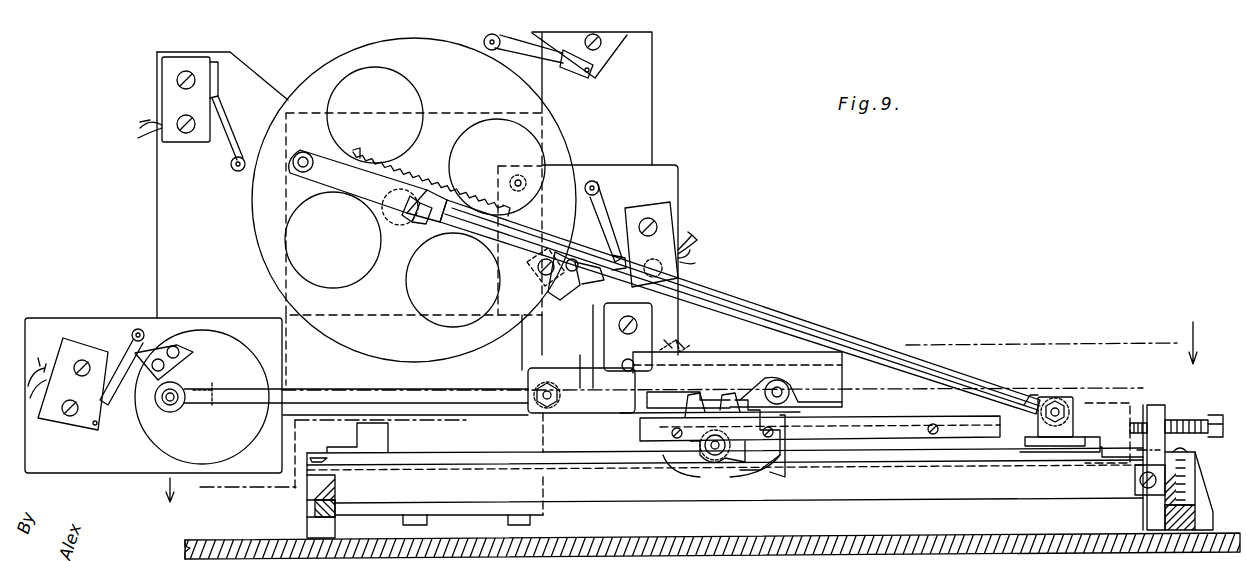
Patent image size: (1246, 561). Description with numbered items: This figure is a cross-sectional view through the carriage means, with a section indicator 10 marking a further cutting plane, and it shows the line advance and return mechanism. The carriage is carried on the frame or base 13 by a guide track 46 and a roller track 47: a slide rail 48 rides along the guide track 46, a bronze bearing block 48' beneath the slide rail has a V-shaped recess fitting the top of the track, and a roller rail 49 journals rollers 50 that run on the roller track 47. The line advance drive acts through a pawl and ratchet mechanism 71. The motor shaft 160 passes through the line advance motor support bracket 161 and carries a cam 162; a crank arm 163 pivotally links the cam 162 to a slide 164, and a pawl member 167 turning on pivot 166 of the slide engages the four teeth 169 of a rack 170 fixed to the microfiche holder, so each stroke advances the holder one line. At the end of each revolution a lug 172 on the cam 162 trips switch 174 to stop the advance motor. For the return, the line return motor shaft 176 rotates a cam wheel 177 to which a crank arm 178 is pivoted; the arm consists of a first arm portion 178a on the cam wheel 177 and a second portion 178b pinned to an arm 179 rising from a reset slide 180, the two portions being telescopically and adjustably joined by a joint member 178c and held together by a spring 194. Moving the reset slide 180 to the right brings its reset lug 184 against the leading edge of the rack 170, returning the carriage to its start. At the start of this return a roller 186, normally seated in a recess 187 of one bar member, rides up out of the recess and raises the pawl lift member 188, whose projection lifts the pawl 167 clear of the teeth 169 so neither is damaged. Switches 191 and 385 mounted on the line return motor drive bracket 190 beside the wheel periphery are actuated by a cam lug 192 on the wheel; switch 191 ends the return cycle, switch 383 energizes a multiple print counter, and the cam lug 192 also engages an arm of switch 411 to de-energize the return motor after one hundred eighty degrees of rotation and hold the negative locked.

The section line 10 is at (674, 409).
The base 13 is at (840, 538).
The guide track 46 is at (307, 535).
The roller track 47 is at (1172, 513).
The slide rail 48 is at (289, 512).
The bearing block 48' is at (302, 503).
The roller rail 49 is at (1187, 478).
The rollers 50 is at (1147, 490).
The pawl and ratchet mechanism 71 is at (832, 400).
The shaft 160 is at (200, 388).
The line advance motor support bracket 161 is at (93, 315).
The cam 162 is at (212, 330).
The crank arm 163 is at (235, 404).
The slide 164 is at (581, 390).
The pivot 166 is at (790, 390).
The pawl member 167 is at (740, 398).
The teeth 169 is at (785, 477).
The rack 170 is at (810, 426).
The lug 172 is at (160, 338).
The switch 174 is at (72, 350).
The shaft 176 is at (407, 218).
The cam wheel 177 is at (325, 80).
The crank arm 178 is at (470, 209).
The first arm portion 178a is at (340, 190).
The second portion 178b is at (722, 292).
The joint member 178c is at (432, 220).
The arm 179 is at (1075, 400).
The reset slide 180 is at (1098, 447).
The reset lug 184 is at (390, 432).
The roller 186 is at (705, 468).
The recess 187 is at (745, 468).
The pawl lift member 188 is at (740, 395).
The line return motor drive bracket 190 is at (680, 175).
The switch 191 is at (616, 345).
The cam lug 192 is at (568, 295).
The spring 194 is at (440, 172).
The switch 383 is at (668, 215).
The switch 385 is at (607, 55).
The switch 411 is at (168, 92).